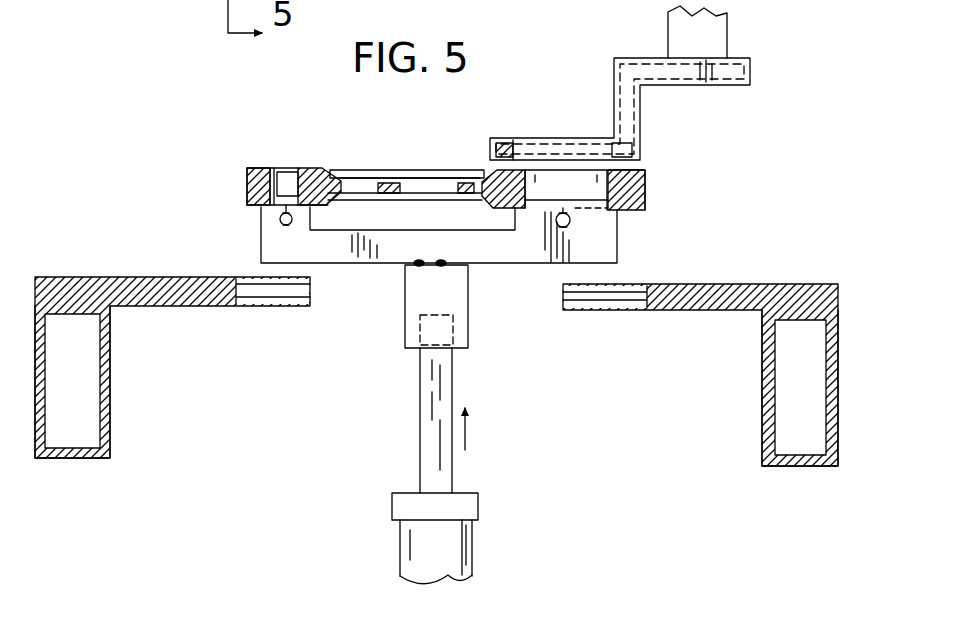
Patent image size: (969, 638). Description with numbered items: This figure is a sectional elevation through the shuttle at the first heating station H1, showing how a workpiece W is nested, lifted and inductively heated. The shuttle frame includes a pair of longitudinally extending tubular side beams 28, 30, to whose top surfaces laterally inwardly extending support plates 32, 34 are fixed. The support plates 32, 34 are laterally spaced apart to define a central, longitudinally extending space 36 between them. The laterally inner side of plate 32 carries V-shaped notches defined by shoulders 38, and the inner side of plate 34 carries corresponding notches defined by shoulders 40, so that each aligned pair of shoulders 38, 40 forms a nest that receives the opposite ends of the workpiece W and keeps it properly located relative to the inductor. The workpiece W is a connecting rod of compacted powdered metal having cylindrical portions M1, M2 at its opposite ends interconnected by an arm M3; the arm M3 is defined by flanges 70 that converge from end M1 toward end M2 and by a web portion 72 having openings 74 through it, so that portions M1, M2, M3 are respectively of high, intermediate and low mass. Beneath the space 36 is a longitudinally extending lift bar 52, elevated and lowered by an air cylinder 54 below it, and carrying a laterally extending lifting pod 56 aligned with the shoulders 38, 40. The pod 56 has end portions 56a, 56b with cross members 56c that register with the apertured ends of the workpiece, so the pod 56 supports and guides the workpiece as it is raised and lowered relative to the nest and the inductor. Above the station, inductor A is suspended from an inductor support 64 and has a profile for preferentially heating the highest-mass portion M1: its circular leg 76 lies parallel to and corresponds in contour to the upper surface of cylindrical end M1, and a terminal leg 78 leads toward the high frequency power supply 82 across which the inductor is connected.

The tubular side beam 28 is at (762, 425).
The tubular side beam 30 is at (108, 416).
The support plate 32 is at (763, 288).
The support plate 34 is at (155, 280).
The central longitudinally extending space 36 is at (520, 296).
The shoulders 38 is at (648, 290).
The shoulders 40 is at (258, 286).
The lift bar 52 is at (458, 320).
The air cylinder 54 is at (462, 540).
The lifting pod 56 is at (385, 266).
The end portion 56a is at (648, 192).
The end portion 56b is at (247, 188).
The cross member 56c is at (286, 226).
The inductor support 64 is at (716, 33).
The flanges 70 is at (346, 170).
The web portion 72 is at (390, 183).
The openings 74 is at (442, 192).
The circular leg 76 is at (520, 142).
The terminal leg 78 is at (617, 83).
The high frequency power supply 82 is at (149, 10).
The inductor A is at (490, 140).
The heating station H1 is at (506, 100).
The cylindrical portion M1 is at (650, 172).
The cylindrical portion M2 is at (247, 163).
The arm M3 is at (421, 178).
The workpiece W is at (256, 163).